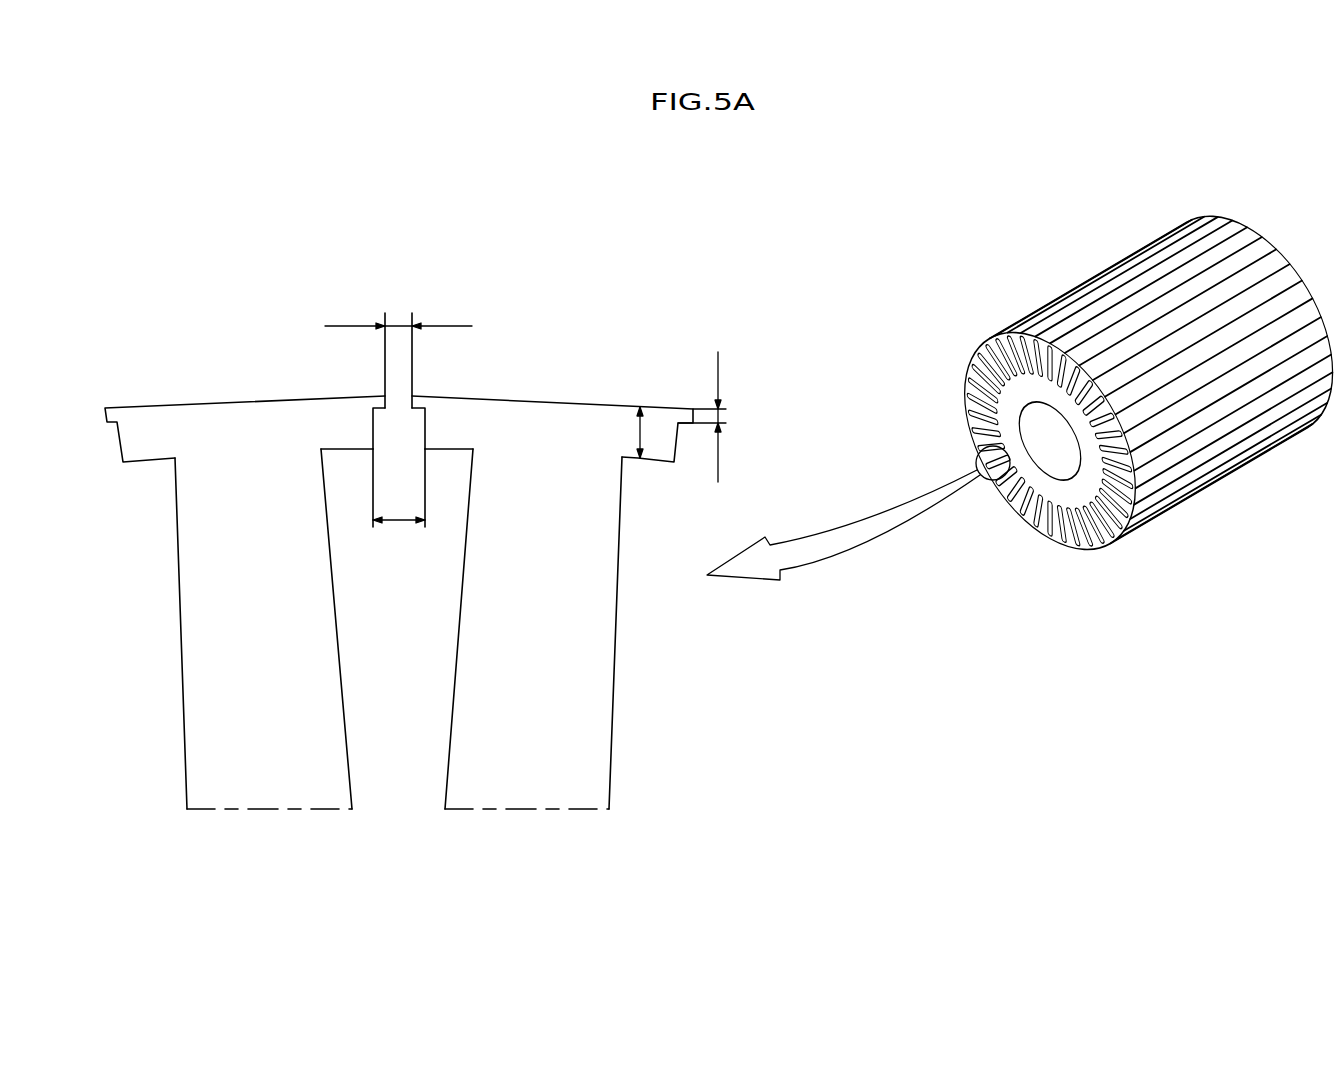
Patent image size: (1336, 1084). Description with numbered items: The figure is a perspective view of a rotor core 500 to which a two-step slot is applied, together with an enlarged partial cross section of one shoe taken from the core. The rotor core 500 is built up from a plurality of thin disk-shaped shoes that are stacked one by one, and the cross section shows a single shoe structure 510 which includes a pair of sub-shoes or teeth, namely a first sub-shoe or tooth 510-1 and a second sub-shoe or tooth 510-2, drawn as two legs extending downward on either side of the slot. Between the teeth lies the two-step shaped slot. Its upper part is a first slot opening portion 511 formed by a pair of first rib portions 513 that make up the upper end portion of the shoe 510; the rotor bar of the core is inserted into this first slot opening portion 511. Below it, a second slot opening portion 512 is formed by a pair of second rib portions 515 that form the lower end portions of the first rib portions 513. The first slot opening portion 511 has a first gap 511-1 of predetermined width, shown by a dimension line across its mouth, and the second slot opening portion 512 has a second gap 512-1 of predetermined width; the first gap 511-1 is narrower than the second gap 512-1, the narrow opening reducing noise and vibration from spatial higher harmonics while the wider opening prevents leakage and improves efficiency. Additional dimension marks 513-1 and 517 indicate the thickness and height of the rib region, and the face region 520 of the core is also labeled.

The rotor core 500 is at (1223, 223).
The shoe structure 510 is at (206, 216).
The first sub-shoe or tooth 510-1 is at (272, 780).
The second sub-shoe or tooth 510-2 is at (528, 780).
The first slot opening portion 511 is at (396, 409).
The first gap 511-1 is at (398, 328).
The second slot opening portion 512 is at (391, 439).
The second gap 512-1 is at (400, 522).
The first rib portion 513 is at (410, 396).
The thickness of flange step 513-1 is at (724, 410).
The second rib portion 515 is at (423, 430).
The height of flange 517 is at (638, 432).
The yoke of stator core 520 is at (1022, 392).